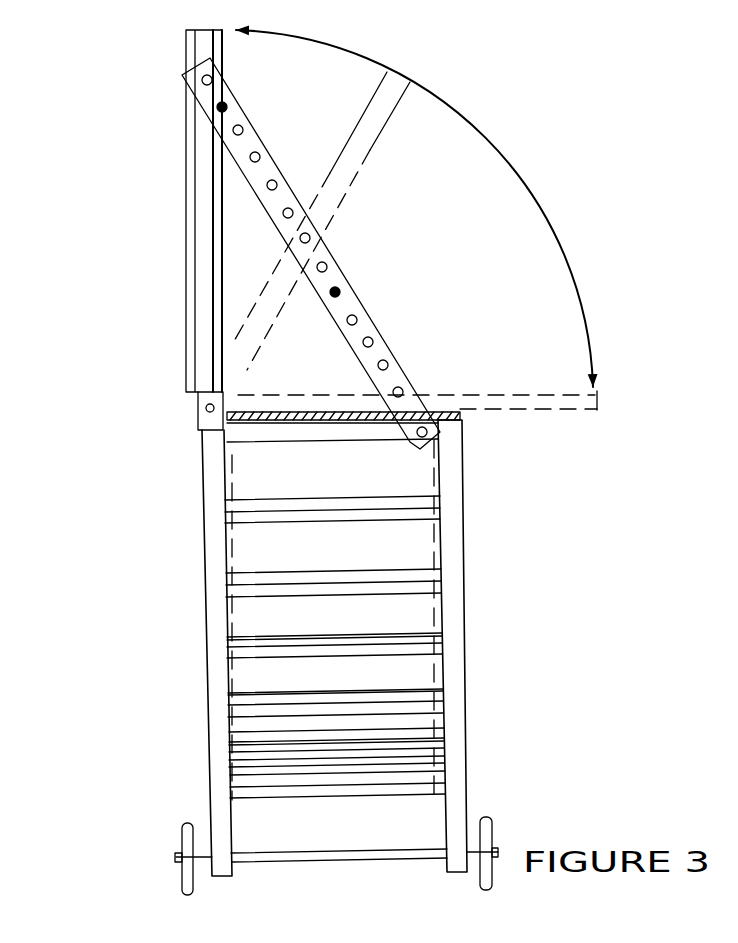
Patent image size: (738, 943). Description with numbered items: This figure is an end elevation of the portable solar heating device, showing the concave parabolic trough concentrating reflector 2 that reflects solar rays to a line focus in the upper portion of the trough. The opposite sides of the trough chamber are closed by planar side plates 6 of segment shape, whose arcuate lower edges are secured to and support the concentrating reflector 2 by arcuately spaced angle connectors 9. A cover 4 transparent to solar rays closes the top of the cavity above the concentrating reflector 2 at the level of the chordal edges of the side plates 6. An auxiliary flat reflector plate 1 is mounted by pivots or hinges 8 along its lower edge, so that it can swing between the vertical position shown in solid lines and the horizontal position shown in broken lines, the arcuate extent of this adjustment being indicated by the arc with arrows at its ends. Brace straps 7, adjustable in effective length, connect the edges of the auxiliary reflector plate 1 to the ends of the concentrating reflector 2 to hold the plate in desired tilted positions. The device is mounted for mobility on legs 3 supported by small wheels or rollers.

The auxiliary flat reflector plate 1 is at (185, 279).
The concave parabolic trough concentrating reflector 2 is at (270, 555).
The legs 3 is at (200, 808).
The cover 4 is at (280, 407).
The planar side plates 6 is at (227, 627).
The brace straps 7 is at (368, 300).
The pivots or hinges 8 is at (190, 402).
The angle connectors 9 is at (408, 747).